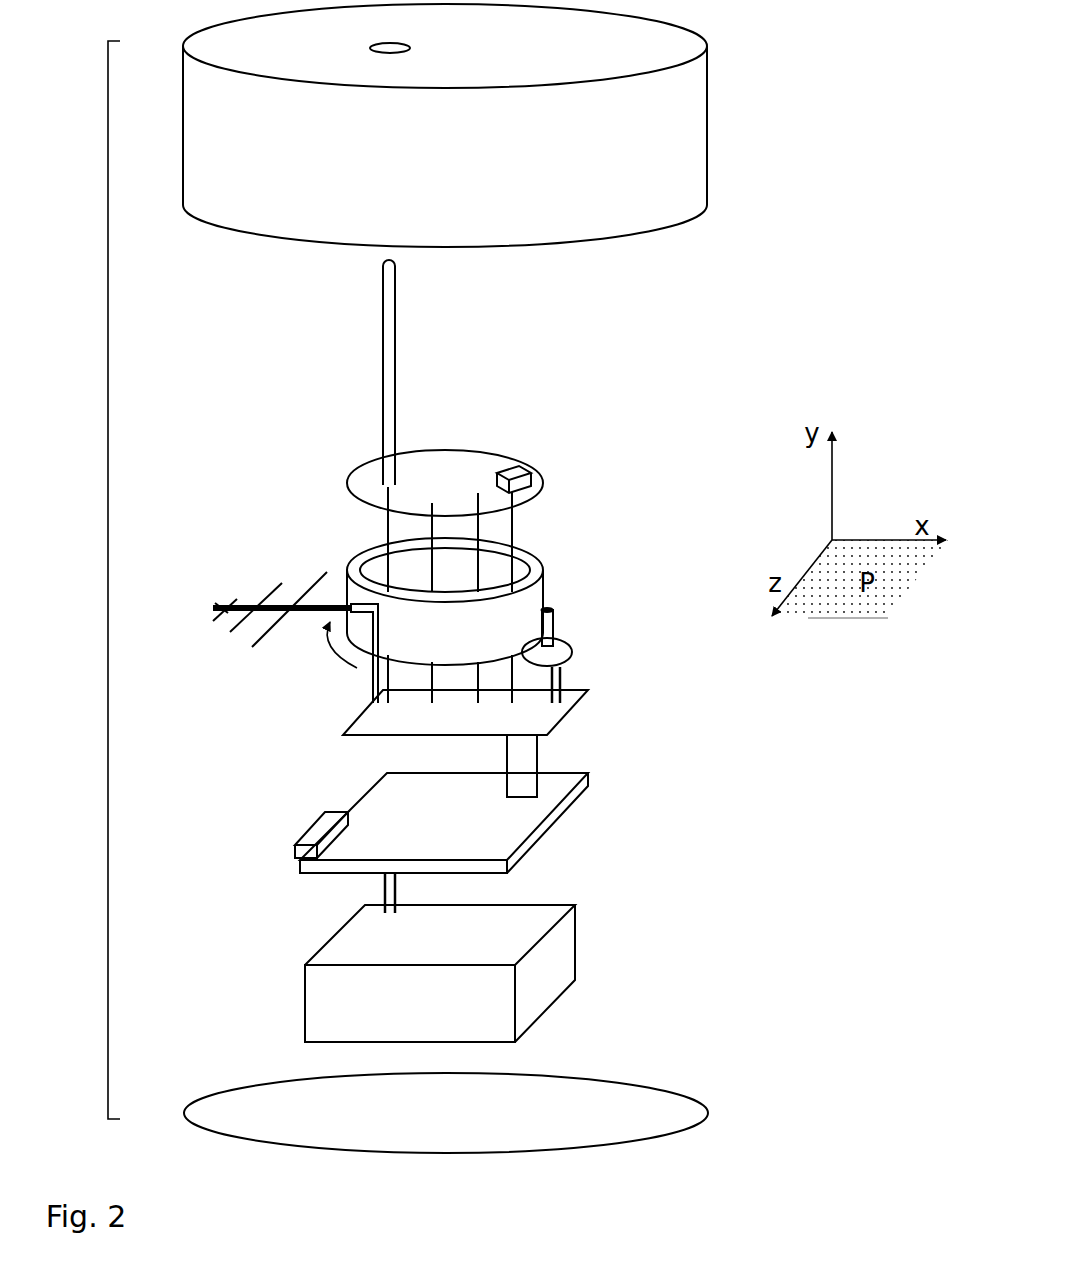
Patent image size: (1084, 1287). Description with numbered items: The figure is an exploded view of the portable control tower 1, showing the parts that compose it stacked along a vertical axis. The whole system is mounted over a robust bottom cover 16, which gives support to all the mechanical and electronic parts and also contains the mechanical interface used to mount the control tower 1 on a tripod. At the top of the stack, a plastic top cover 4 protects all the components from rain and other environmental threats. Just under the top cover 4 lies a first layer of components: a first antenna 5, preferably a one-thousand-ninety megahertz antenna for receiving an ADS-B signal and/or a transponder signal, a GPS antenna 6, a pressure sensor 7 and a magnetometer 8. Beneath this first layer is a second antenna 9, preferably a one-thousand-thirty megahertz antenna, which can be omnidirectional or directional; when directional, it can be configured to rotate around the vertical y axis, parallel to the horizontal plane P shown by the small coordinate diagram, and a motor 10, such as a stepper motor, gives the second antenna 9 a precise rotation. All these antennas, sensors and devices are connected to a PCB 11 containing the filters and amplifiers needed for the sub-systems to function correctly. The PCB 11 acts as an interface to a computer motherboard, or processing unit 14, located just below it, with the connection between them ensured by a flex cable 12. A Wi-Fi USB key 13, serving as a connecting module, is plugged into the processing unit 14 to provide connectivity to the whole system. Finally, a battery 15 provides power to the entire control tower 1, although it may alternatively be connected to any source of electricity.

The portable control tower 1 is at (108, 580).
The top cover 4 is at (630, 197).
The first antenna 5 is at (388, 327).
The GPS antenna 6 is at (447, 465).
The pressure sensor 7 is at (486, 472).
The magnetometer 8 is at (524, 477).
The second antenna 9 is at (250, 588).
The motor 10 is at (560, 657).
The PCB 11 is at (552, 720).
The flex cable 12 is at (527, 760).
The Wi-Fi USB key 13 is at (300, 828).
The processing unit 14 is at (507, 842).
The battery 15 is at (543, 967).
The bottom cover 16 is at (645, 1107).